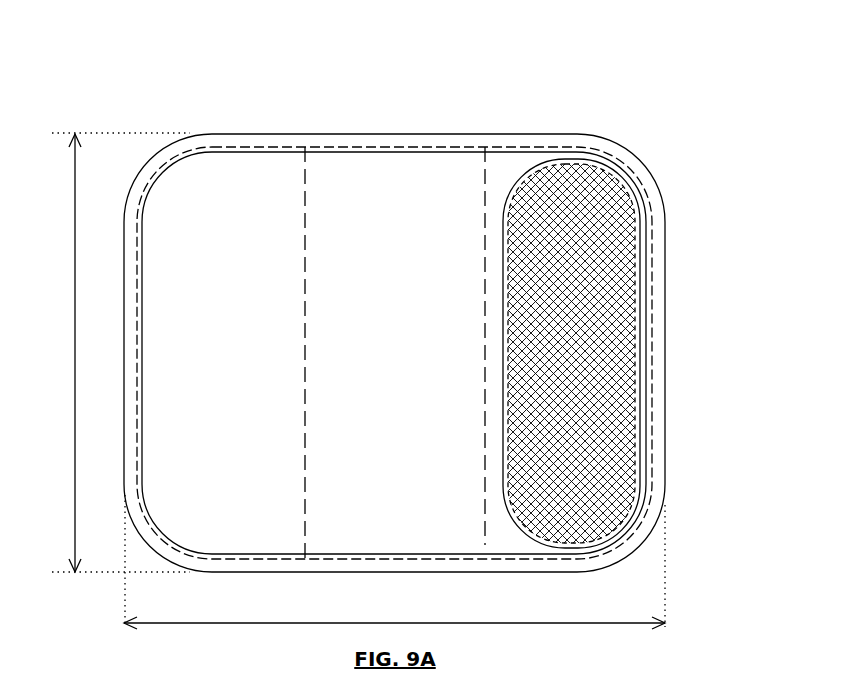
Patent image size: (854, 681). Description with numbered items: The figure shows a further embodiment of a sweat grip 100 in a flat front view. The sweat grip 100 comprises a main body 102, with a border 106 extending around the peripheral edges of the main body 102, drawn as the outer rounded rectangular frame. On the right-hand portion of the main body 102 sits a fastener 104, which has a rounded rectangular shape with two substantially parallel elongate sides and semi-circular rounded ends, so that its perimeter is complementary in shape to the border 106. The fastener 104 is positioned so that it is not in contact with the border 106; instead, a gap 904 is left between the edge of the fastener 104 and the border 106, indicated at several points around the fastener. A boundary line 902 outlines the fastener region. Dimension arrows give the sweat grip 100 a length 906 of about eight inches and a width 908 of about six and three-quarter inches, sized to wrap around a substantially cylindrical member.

The sweat grip 100 is at (230, 88).
The main body 102 is at (381, 224).
The fastener 104 is at (563, 223).
The border 106 is at (333, 136).
The pill-shaped region boundary 902 is at (531, 172).
The gap 904 is at (626, 181).
The length 906 is at (394, 562).
The width 908 is at (109, 352).